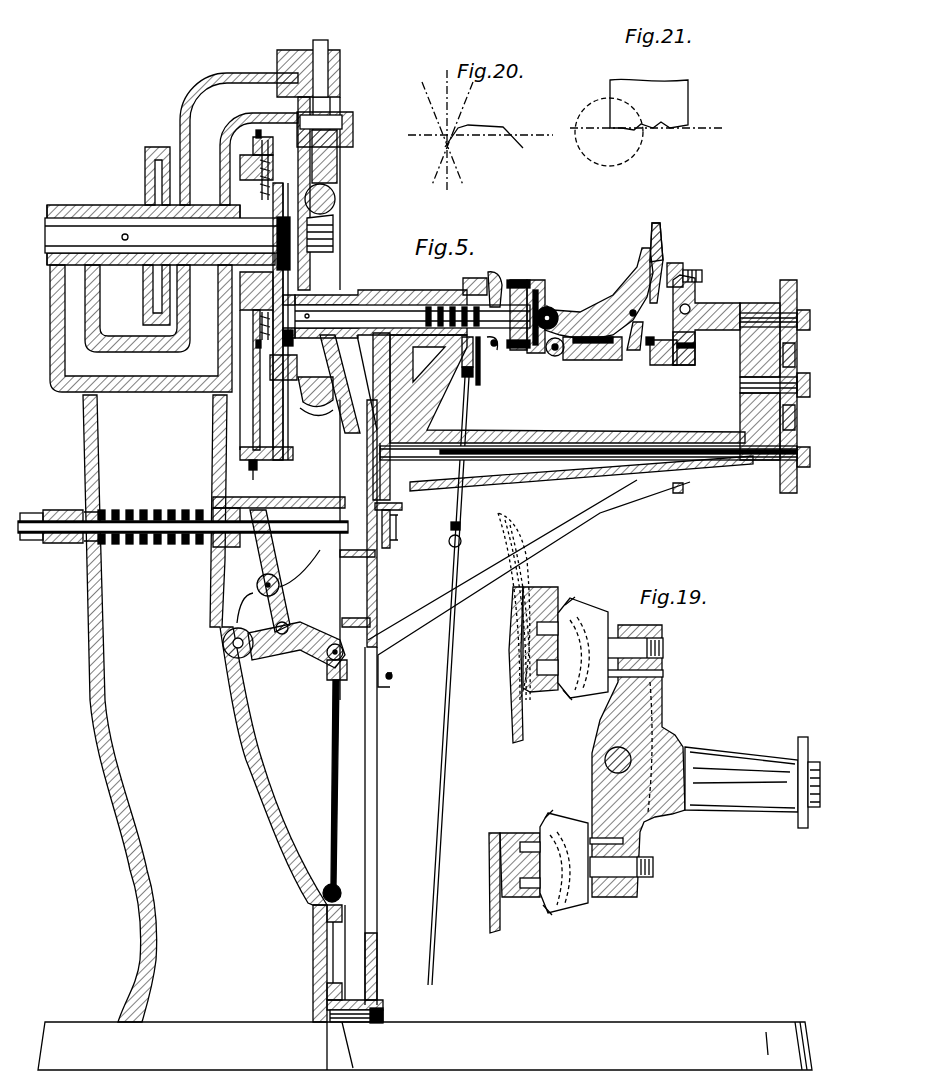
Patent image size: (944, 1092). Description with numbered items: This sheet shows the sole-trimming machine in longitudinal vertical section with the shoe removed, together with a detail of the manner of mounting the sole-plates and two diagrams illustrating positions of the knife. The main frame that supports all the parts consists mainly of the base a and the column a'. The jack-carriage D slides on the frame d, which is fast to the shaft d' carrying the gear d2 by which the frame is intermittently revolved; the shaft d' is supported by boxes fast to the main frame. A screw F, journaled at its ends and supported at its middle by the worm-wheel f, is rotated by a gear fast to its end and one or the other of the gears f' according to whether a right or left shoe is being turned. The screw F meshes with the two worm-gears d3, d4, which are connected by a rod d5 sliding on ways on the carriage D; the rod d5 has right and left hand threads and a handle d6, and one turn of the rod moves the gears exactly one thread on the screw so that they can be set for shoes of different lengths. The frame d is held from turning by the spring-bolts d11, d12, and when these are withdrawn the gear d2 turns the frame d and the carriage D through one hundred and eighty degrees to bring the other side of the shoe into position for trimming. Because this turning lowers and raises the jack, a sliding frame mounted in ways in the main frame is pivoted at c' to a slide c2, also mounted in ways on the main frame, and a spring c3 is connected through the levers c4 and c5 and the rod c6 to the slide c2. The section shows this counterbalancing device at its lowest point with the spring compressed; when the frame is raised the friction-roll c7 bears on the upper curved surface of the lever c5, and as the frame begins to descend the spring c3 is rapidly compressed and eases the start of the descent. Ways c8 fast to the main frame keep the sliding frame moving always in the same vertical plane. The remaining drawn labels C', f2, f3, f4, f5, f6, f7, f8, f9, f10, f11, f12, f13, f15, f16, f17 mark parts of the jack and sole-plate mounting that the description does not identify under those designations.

In FIG. 5, the base a is at (425, 1046).
In FIG. 5, the column a' is at (205, 708).
In FIG. 5, the pivot c' is at (365, 999).
In FIG. 5, the slide c2 is at (330, 944).
In FIG. 5, the spring c3 is at (163, 520).
In FIG. 5, the lever c4 is at (262, 549).
In FIG. 5, the lever c5 is at (275, 658).
In FIG. 5, the rod c6 is at (331, 746).
In FIG. 5, the friction-roll c7 is at (245, 657).
In FIG. 5, the ways c8 is at (390, 545).
In FIG. 5, the guide tube C' is at (389, 826).
In FIG. 5, the frame d is at (273, 203).
In FIG. 5, the shaft d' is at (161, 235).
In FIG. 5, the gear d2 is at (150, 185).
In FIG. 5, the worm-gear d3 is at (333, 407).
In FIG. 5, the worm-gear d4 is at (335, 235).
In FIG. 5, the rod d5 is at (285, 356).
In FIG. 5, the handle d6 is at (262, 475).
In FIG. 5, the spring-bolt d11 is at (240, 306).
In FIG. 5, the spring-bolt d12 is at (240, 166).
In FIG. 5, the jack-carriage D is at (282, 438).
In FIG. 5, the screw F is at (338, 203).
In FIG. 19, the worm-wheel f is at (523, 755).
In FIG. 5, the worm-wheel f is at (481, 171).
In FIG. 19, the gears f' is at (475, 902).
In FIG. 5, the gears f' is at (648, 363).
In FIG. 5, the toothed blade f2 is at (648, 248).
In FIG. 5, the link f3 is at (640, 340).
In FIG. 19, the bracket f4 is at (618, 623).
In FIG. 5, the bracket f4 is at (692, 347).
In FIG. 19, the shaft bracket f5 is at (737, 777).
In FIG. 5, the shaft bracket f5 is at (712, 315).
In FIG. 5, the ring f6 is at (535, 353).
In FIG. 5, the spring clamp f7 is at (420, 336).
In FIG. 5, the spindle housing f8 is at (332, 313).
In FIG. 5, the collar f9 is at (499, 298).
In FIG. 5, the curved lever f10 is at (550, 305).
In FIG. 5, the pivot link f11 is at (558, 357).
In FIG. 5, the collar f12 is at (470, 282).
In FIG. 5, the connecting rod f13 is at (478, 340).
In FIG. 5, the rod f15 is at (535, 478).
In FIG. 5, the support bar f16 is at (377, 433).
In FIG. 5, the bolt f17 is at (798, 372).